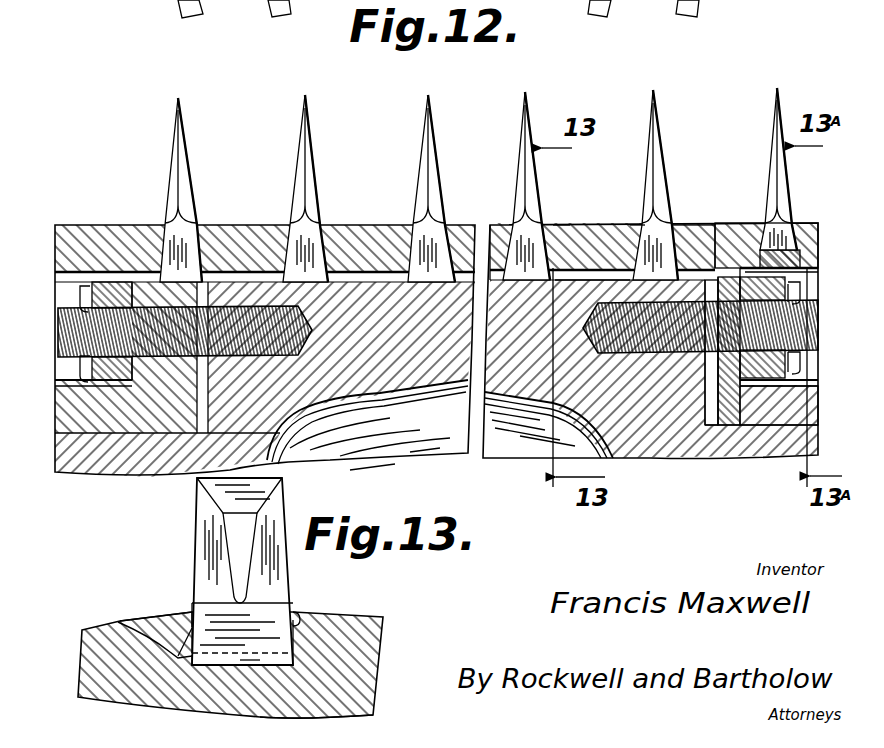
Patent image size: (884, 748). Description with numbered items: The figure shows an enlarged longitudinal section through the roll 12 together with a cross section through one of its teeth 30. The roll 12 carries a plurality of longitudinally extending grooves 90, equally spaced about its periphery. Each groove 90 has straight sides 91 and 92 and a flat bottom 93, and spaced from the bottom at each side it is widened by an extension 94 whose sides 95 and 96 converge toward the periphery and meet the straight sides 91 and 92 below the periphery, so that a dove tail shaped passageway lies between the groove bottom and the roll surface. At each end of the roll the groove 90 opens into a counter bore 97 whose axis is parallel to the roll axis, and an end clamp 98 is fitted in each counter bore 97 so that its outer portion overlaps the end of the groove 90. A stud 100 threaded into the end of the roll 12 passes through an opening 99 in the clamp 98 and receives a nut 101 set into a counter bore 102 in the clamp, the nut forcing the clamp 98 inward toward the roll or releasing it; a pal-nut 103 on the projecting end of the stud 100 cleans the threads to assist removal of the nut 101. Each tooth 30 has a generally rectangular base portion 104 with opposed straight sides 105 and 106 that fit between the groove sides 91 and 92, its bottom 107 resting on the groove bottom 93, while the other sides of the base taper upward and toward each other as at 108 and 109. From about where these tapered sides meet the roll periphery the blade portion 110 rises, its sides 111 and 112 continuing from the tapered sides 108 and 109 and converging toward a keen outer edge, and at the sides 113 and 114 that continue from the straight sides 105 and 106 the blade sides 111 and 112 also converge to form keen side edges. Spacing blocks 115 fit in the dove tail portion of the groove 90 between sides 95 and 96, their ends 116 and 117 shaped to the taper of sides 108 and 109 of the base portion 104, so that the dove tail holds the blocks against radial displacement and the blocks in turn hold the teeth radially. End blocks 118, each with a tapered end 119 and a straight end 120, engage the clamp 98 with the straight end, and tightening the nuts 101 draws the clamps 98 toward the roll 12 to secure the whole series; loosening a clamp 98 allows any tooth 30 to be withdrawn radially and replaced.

In FIG. 12, the roll 12 is at (516, 445).
In FIG. 13, the roll 12 is at (108, 688).
In FIG. 13, the tooth 30 is at (285, 486).
In FIG. 12, the groove 90 is at (598, 275).
In FIG. 13, the straight side 91 is at (297, 656).
In FIG. 13, the straight side 92 is at (125, 623).
In FIG. 13, the flat bottom 93 is at (305, 708).
In FIG. 13, the extension 94 is at (155, 618).
In FIG. 13, the side 95 is at (298, 642).
In FIG. 13, the side 96 is at (182, 650).
In FIG. 12, the counter bore 97 is at (712, 412).
In FIG. 12, the end clamp 98 is at (765, 410).
In FIG. 12, the opening 99 is at (685, 408).
In FIG. 12, the stud 100 is at (795, 323).
In FIG. 12, the nut 101 is at (795, 240).
In FIG. 12, the counter bore 102 is at (806, 370).
In FIG. 12, the pal-nut 103 is at (798, 285).
In FIG. 13, the base portion 104 is at (297, 650).
In FIG. 13, the straight side 105 is at (203, 668).
In FIG. 13, the straight side 106 is at (293, 603).
In FIG. 13, the bottom 107 is at (255, 662).
In FIG. 12, the tapered side 108 is at (555, 235).
In FIG. 12, the tapered side 109 is at (502, 230).
In FIG. 12, the blade portion 110 is at (530, 192).
In FIG. 12, the side 111 is at (667, 172).
In FIG. 12, the side 112 is at (642, 170).
In FIG. 13, the side 113 is at (288, 522).
In FIG. 13, the side 114 is at (197, 530).
In FIG. 12, the spacing block 115 is at (365, 237).
In FIG. 12, the end 116 is at (325, 237).
In FIG. 12, the end 117 is at (397, 223).
In FIG. 12, the end block 118 is at (700, 235).
In FIG. 12, the tapered end 119 is at (680, 223).
In FIG. 12, the straight end 120 is at (722, 235).